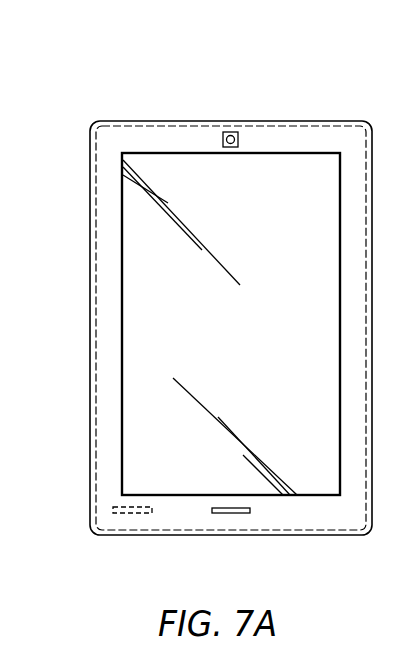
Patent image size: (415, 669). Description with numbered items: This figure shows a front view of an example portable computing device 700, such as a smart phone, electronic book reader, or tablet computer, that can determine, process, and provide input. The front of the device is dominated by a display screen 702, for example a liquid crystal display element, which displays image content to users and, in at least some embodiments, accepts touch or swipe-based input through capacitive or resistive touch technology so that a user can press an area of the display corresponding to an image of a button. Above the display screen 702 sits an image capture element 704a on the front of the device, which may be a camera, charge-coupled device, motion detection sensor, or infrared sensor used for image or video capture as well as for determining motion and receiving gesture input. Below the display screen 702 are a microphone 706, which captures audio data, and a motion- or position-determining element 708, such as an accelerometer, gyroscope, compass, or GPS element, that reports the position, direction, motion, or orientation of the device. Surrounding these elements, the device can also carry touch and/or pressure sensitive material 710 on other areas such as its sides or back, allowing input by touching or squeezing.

The portable computing device 700 is at (153, 78).
The display screen 702 is at (122, 222).
The image capture element 704a is at (232, 130).
The microphone 706 is at (227, 513).
The motion- or position-determining element 708 is at (131, 513).
The touch and/or pressure sensitive material 710 is at (90, 324).